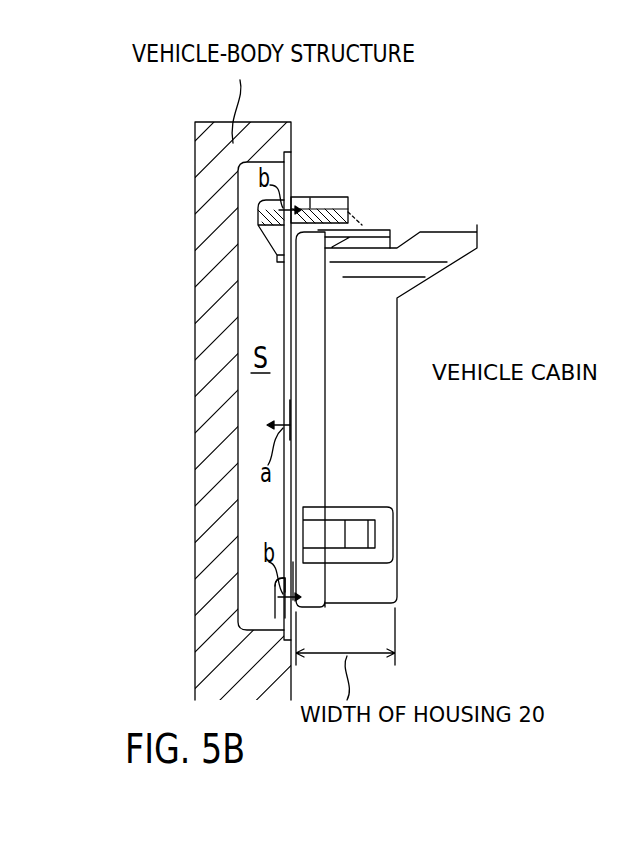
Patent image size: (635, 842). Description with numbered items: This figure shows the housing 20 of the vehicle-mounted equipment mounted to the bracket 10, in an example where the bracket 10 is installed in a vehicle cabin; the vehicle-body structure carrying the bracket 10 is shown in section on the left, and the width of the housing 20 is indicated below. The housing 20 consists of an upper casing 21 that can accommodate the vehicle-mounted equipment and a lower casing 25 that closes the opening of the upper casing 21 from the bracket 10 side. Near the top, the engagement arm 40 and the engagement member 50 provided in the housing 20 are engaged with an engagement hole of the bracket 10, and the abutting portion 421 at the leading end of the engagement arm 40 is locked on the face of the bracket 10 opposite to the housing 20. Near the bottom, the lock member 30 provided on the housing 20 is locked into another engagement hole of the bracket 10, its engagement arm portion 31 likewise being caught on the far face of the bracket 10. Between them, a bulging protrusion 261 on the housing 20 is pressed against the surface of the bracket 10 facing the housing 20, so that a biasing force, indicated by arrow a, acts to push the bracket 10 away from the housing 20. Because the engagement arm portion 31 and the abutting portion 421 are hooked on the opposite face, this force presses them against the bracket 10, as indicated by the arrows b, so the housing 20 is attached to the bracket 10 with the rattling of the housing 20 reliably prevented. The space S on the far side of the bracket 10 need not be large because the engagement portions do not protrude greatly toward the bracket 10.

The bracket 10 is at (289, 297).
The housing 20 is at (409, 416).
The upper casing 21 is at (355, 480).
The lower casing 25 is at (313, 435).
The lock member 30 is at (265, 612).
The engagement arm portion 31 is at (279, 591).
The engagement arm 40 is at (333, 206).
The engagement member 50 is at (307, 189).
The bulging protrusion 261 is at (285, 415).
The abutting portion 421 is at (258, 210).